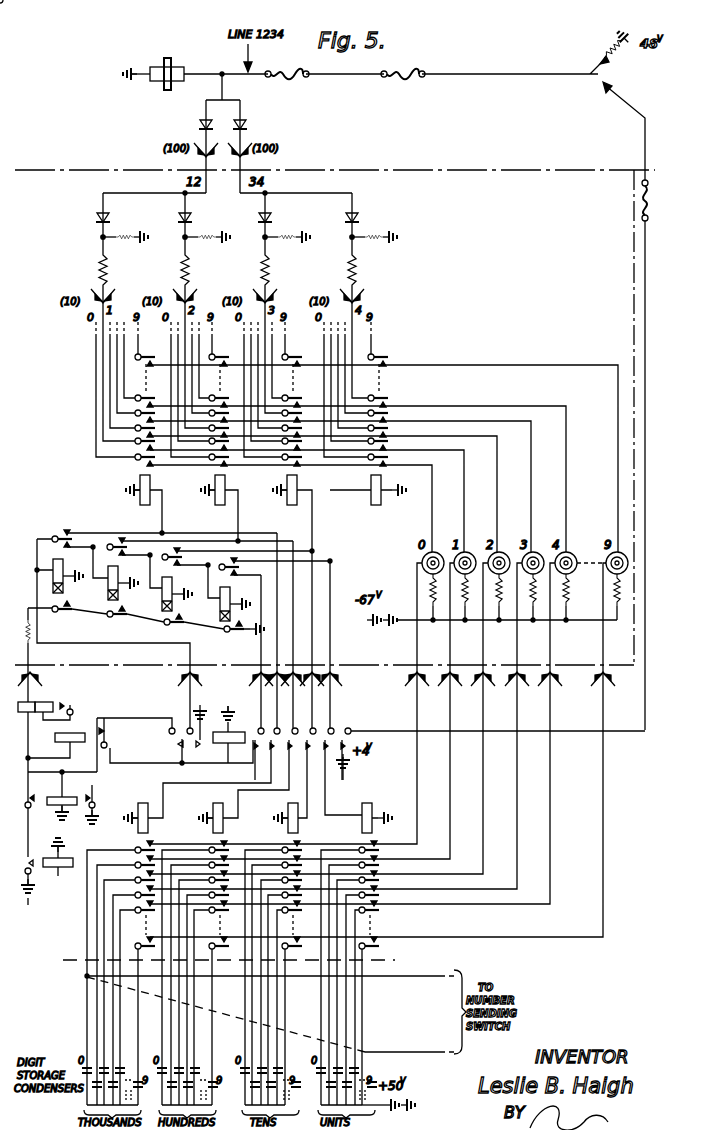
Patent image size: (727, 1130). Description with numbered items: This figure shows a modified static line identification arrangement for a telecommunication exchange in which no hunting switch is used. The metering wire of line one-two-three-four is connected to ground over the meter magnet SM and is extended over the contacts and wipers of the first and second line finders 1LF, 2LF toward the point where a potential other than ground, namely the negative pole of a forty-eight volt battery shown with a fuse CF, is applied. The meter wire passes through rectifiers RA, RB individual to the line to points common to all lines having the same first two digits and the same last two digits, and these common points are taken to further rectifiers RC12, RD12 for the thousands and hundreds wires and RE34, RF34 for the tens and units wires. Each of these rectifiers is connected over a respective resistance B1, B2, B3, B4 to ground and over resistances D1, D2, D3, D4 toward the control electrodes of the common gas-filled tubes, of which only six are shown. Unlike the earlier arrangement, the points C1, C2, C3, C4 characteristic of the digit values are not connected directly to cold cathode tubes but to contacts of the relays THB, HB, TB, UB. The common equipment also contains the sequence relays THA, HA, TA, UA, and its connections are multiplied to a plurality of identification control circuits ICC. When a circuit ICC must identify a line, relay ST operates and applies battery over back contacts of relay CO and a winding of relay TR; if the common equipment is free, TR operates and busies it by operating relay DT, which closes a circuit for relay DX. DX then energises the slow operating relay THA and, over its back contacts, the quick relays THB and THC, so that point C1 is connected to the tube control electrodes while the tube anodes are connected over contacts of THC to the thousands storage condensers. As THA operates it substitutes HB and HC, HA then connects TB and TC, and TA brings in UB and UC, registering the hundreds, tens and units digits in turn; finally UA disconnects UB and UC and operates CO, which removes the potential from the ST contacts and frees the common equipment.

The meter magnet SM is at (153, 82).
The first line finder 1LF is at (287, 65).
The second line finder 2LF is at (403, 65).
The fuse CF is at (654, 200).
The rectifier RA is at (194, 125).
The rectifier RB is at (250, 125).
The rectifier RC12 is at (83, 219).
The rectifier RD12 is at (166, 219).
The rectifier RE34 is at (282, 219).
The rectifier RF34 is at (370, 219).
The resistance B1 is at (125, 233).
The resistance B2 is at (207, 233).
The resistance B3 is at (287, 233).
The resistance B4 is at (374, 233).
The point C1 is at (91, 238).
The point C2 is at (173, 238).
The point C3 is at (254, 238).
The point C4 is at (342, 238).
The resistance D1 is at (113, 270).
The resistance D2 is at (195, 270).
The resistance D3 is at (275, 270).
The resistance D4 is at (362, 270).
The relay THB is at (144, 504).
The relay HB is at (219, 508).
The relay TB is at (292, 513).
The relay UB is at (368, 499).
The sequence relay THA is at (63, 598).
The sequence relay HA is at (121, 604).
The sequence relay TA is at (174, 613).
The sequence relay UA is at (233, 622).
The relay TR is at (45, 700).
The relay DT is at (140, 745).
The relay DX is at (224, 734).
The relay CO is at (63, 797).
The relay ST is at (47, 865).
The identification control circuit ICC is at (31, 911).
The relay THC is at (197, 806).
The relay HC is at (244, 806).
The relay TC is at (284, 806).
The relay UC is at (358, 806).